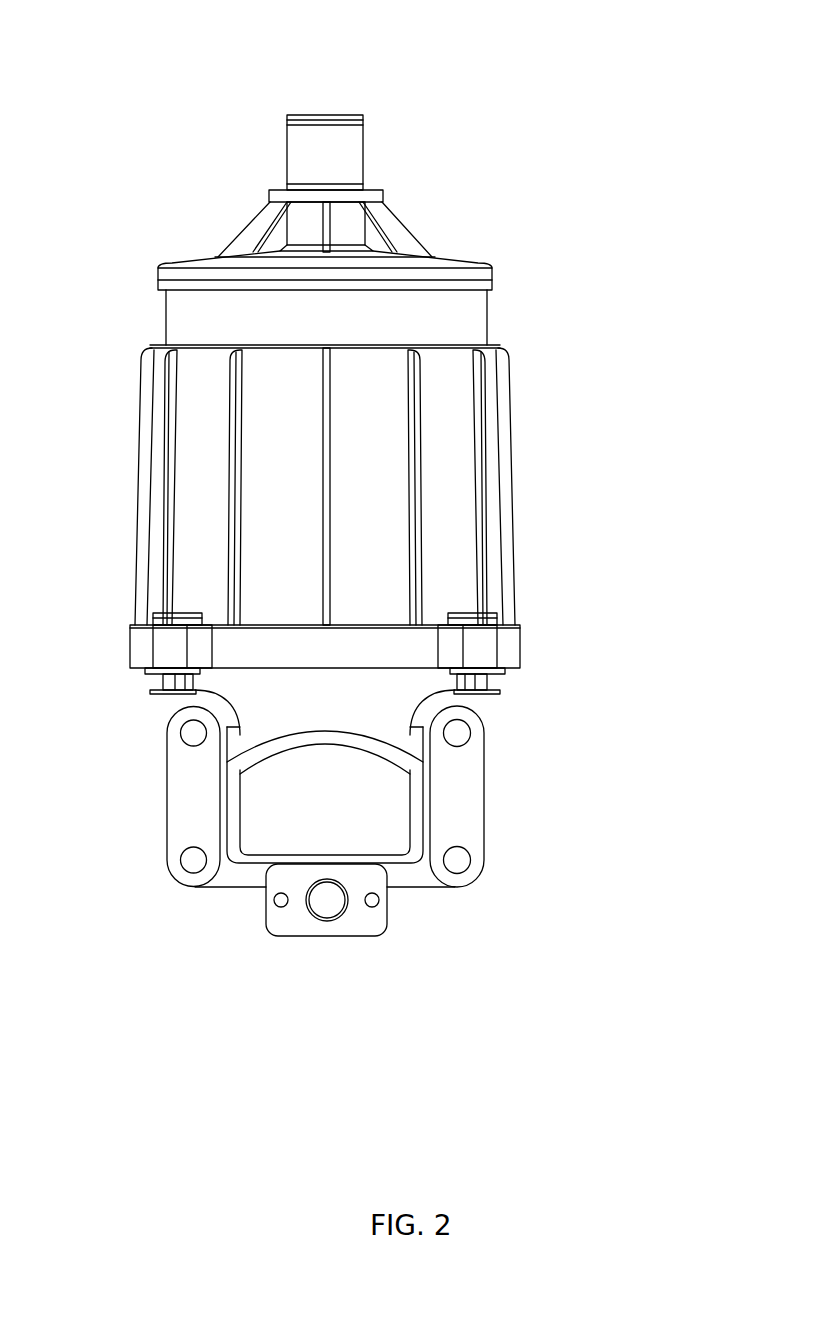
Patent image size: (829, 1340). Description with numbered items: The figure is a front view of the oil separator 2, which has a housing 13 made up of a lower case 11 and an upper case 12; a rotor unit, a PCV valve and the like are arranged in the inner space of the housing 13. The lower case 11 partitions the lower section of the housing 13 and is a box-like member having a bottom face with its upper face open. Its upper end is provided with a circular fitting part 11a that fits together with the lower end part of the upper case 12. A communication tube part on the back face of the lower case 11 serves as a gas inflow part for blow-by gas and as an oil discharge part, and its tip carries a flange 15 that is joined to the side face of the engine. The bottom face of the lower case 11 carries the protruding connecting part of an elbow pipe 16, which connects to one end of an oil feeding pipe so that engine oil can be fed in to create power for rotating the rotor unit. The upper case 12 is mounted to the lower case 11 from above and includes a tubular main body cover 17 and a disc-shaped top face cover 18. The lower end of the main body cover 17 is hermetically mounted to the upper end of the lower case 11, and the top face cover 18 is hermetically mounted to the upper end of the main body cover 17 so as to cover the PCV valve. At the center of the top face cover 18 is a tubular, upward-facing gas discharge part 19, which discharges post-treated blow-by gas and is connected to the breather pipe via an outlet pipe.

The oil separator 2 is at (536, 108).
The lower case 11 is at (427, 803).
The circular fitting part 11a is at (302, 647).
The upper case 12 is at (634, 288).
The housing 13 is at (684, 322).
The flange 15 is at (413, 888).
The elbow pipe 16 is at (365, 925).
The main body cover 17 is at (513, 437).
The top face cover 18 is at (413, 232).
The gas discharge part 19 is at (365, 156).